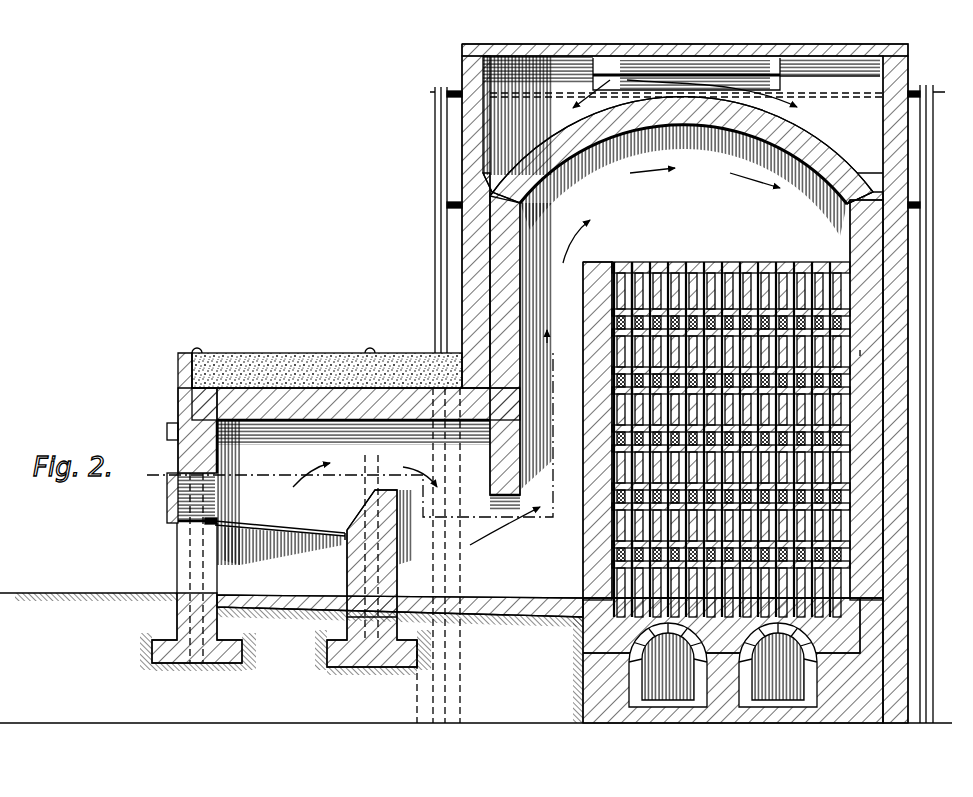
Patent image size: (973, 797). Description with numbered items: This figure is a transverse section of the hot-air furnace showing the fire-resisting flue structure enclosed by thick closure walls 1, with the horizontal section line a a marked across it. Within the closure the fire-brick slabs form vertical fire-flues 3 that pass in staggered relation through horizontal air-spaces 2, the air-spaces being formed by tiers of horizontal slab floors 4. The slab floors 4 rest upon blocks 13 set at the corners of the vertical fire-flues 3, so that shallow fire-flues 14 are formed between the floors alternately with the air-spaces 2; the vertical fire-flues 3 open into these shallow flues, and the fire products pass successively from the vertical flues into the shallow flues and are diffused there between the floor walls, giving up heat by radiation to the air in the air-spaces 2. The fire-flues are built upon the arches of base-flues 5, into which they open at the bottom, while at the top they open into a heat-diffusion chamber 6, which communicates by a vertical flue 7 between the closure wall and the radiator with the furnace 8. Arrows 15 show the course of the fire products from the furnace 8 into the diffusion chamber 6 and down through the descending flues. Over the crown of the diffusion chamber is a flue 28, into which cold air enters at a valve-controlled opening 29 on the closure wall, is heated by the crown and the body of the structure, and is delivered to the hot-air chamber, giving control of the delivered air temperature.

The thick closure walls 1 is at (480, 297).
The horizontal air-spaces 2 is at (640, 347).
The vertical fire-flues 3 is at (650, 268).
The slab floors 4 is at (623, 310).
The base-flues 5 is at (668, 700).
The heat-diffusion chamber 6 is at (683, 168).
The vertical flue 7 is at (557, 262).
The furnace 8 is at (275, 534).
The blocks 13 is at (633, 323).
The shallow fire-flues 14 is at (640, 372).
The arrows 15 is at (645, 268).
The flue 28 is at (831, 115).
The valve-controlled opening 29 is at (690, 70).
The section line a a is at (170, 475).